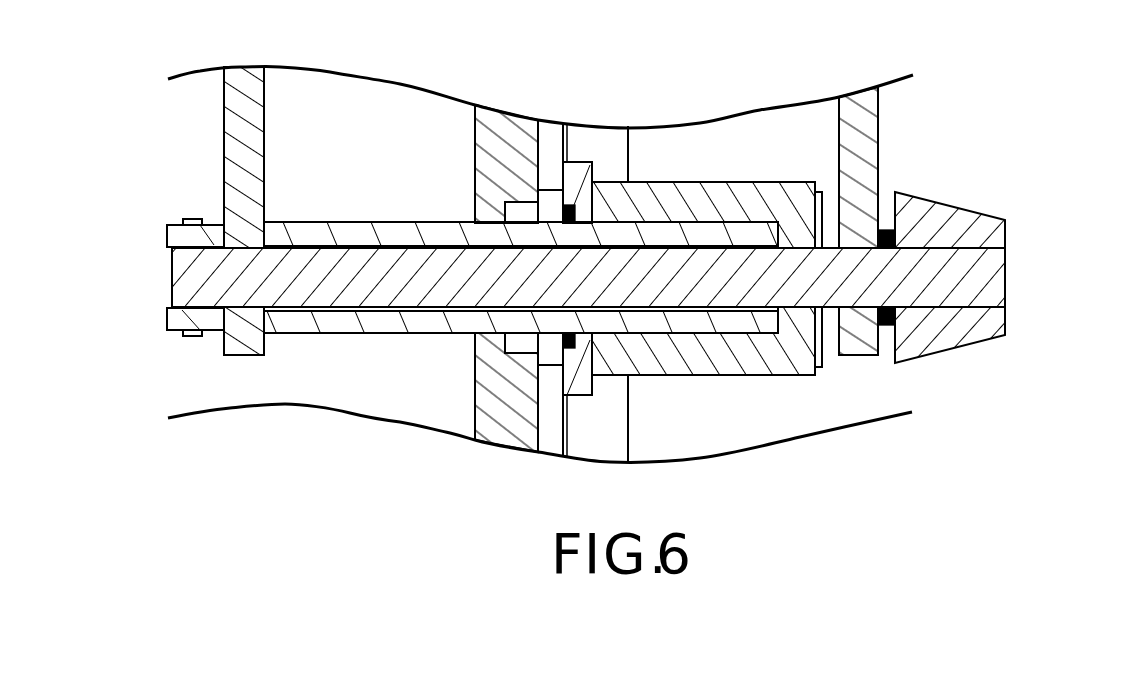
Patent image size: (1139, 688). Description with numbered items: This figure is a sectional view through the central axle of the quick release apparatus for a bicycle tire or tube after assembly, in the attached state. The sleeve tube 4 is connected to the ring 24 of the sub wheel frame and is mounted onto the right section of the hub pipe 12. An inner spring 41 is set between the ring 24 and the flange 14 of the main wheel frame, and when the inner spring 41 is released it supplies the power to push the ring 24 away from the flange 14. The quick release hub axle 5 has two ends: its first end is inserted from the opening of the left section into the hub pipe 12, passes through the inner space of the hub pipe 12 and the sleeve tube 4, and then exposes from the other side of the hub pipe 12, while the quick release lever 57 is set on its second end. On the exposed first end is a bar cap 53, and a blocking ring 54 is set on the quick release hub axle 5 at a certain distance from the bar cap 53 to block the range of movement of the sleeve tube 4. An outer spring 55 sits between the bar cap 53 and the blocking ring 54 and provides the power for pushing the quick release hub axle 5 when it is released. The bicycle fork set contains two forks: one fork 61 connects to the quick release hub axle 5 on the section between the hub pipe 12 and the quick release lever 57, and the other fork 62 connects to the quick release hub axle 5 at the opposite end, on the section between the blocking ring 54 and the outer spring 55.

The sleeve tube 4 is at (713, 182).
The quick release hub axle 5 is at (386, 296).
The hub pipe 12 is at (388, 222).
The flange 14 is at (528, 184).
The ring 24 is at (594, 162).
The inner spring 41 is at (583, 346).
The bar cap 53 is at (995, 218).
The blocking ring 54 is at (822, 368).
The outer spring 55 is at (895, 205).
The quick release lever 57 is at (176, 325).
The fork 61 is at (232, 150).
The fork 62 is at (875, 110).